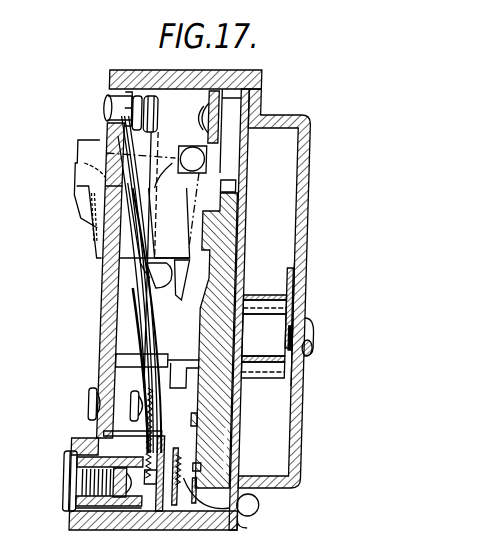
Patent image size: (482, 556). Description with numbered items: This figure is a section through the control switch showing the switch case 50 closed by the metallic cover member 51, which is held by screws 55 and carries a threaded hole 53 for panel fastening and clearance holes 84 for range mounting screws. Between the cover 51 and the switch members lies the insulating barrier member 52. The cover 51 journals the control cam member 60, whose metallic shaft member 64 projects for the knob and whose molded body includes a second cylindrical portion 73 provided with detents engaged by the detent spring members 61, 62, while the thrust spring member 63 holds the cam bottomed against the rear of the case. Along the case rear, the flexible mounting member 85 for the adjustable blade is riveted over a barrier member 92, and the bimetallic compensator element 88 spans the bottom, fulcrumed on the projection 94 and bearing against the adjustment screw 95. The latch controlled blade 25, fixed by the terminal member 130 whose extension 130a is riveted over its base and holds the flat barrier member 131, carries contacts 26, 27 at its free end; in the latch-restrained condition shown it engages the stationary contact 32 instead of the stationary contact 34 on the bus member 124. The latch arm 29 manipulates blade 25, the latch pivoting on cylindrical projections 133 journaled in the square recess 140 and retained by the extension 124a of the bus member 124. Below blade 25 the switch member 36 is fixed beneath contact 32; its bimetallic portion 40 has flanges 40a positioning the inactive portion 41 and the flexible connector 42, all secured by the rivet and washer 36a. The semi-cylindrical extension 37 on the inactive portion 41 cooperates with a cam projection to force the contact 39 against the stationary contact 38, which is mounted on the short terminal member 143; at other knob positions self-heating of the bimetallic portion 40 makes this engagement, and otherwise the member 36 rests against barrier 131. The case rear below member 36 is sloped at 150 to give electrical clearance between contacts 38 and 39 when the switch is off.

The switch case 50 is at (110, 63).
The cover member 51 is at (303, 132).
The stationary contact 32 is at (117, 96).
The contact 27 is at (178, 106).
The contact 26 is at (99, 147).
The stationary contact 34 is at (195, 98).
The bus member 124 is at (214, 90).
The extension 124a is at (201, 146).
The cylindrical projections 133 is at (191, 153).
The square recess 140 is at (152, 200).
The bimetallic portion 40 is at (99, 193).
The flanges 40a is at (99, 234).
The switch member 36 is at (127, 282).
The rivet and washer 36a is at (180, 199).
The inactive portion 41 is at (132, 300).
The extension 37 is at (130, 330).
The flexible connector 42 is at (155, 312).
The blade 25 is at (147, 222).
The extension arm 29 is at (166, 270).
The barrier member 131 is at (172, 366).
The sloped portion 150 is at (112, 350).
The contact 39 is at (130, 388).
The terminal member 143 is at (89, 386).
The stationary contact 38 is at (102, 424).
The barrier member 92 is at (164, 430).
The terminal member 130 is at (72, 506).
The extension 130a is at (122, 521).
The flexible mounting member 85 is at (178, 500).
The compensator element 88 is at (215, 521).
The barrier member 52 is at (235, 226).
The control cam member 60 is at (232, 177).
The projection 94 is at (232, 432).
The thrust spring member 63 is at (286, 262).
The detent spring member 61 is at (262, 286).
The holes 84 is at (286, 322).
The detent spring member 62 is at (262, 372).
The second cylindrical portion 73 is at (298, 292).
The threaded hole 53 is at (308, 324).
The shaft member 64 is at (311, 343).
The adjustment screw 95 is at (261, 498).
The screws 55 is at (254, 512).